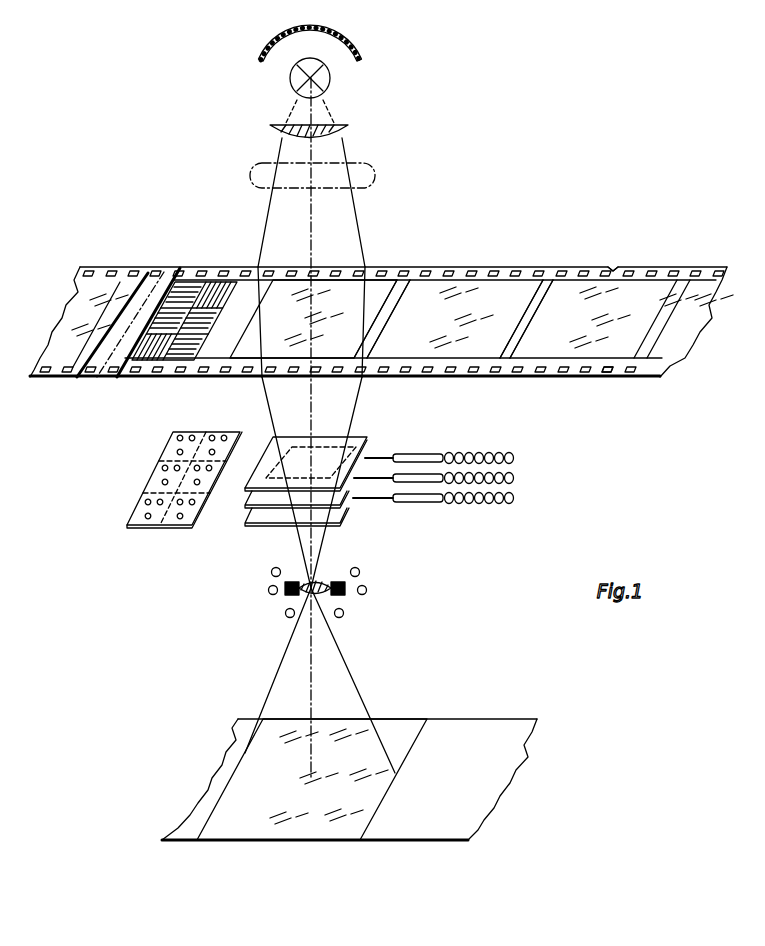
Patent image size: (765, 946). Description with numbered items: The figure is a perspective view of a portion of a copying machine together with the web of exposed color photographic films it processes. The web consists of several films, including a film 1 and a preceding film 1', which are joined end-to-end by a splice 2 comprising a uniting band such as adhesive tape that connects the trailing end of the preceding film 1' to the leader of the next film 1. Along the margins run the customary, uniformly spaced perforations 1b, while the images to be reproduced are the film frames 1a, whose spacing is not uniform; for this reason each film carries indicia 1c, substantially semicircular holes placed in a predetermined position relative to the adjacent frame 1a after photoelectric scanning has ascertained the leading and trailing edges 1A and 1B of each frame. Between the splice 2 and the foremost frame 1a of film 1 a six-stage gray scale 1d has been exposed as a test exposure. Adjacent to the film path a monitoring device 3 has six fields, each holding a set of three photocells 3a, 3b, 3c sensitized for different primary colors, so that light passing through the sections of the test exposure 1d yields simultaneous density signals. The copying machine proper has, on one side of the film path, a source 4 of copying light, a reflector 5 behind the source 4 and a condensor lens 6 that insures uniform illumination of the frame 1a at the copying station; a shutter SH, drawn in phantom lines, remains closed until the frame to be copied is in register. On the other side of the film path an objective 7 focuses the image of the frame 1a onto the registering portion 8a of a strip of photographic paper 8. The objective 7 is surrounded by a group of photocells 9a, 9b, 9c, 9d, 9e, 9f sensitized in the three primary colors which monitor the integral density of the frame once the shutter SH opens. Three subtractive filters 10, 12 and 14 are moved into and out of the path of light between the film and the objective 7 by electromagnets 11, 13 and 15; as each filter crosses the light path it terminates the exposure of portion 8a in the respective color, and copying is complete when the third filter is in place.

The film 1 is at (381, 296).
The preceding film 1' is at (100, 296).
The film frame 1a is at (377, 290).
The perforations 1b is at (601, 374).
The indicia 1c is at (615, 262).
The gray scale 1d is at (217, 282).
The leading edge 1A is at (386, 340).
The trailing edge 1B is at (507, 340).
The splice 2 is at (155, 272).
The monitoring device 3 is at (172, 518).
The photocell 3a is at (144, 501).
The photocell 3b is at (147, 519).
The photocell 3c is at (158, 500).
The source of copying light 4 is at (326, 78).
The reflector 5 is at (352, 40).
The condensor lens 6 is at (349, 128).
The shutter SH is at (376, 172).
The objective 7 is at (331, 580).
The strip of photographic paper 8 is at (497, 728).
The registering portion 8a is at (402, 730).
The photocell 9a is at (360, 568).
The photocell 9b is at (367, 590).
The photocell 9c is at (344, 616).
The photocell 9d is at (286, 615).
The photocell 9e is at (268, 590).
The photocell 9f is at (271, 572).
The subtractive filter 10 is at (357, 438).
The electromagnet 11 is at (434, 457).
The subtractive filter 12 is at (368, 452).
The electromagnet 13 is at (410, 478).
The subtractive filter 14 is at (258, 517).
The electromagnet 15 is at (440, 499).